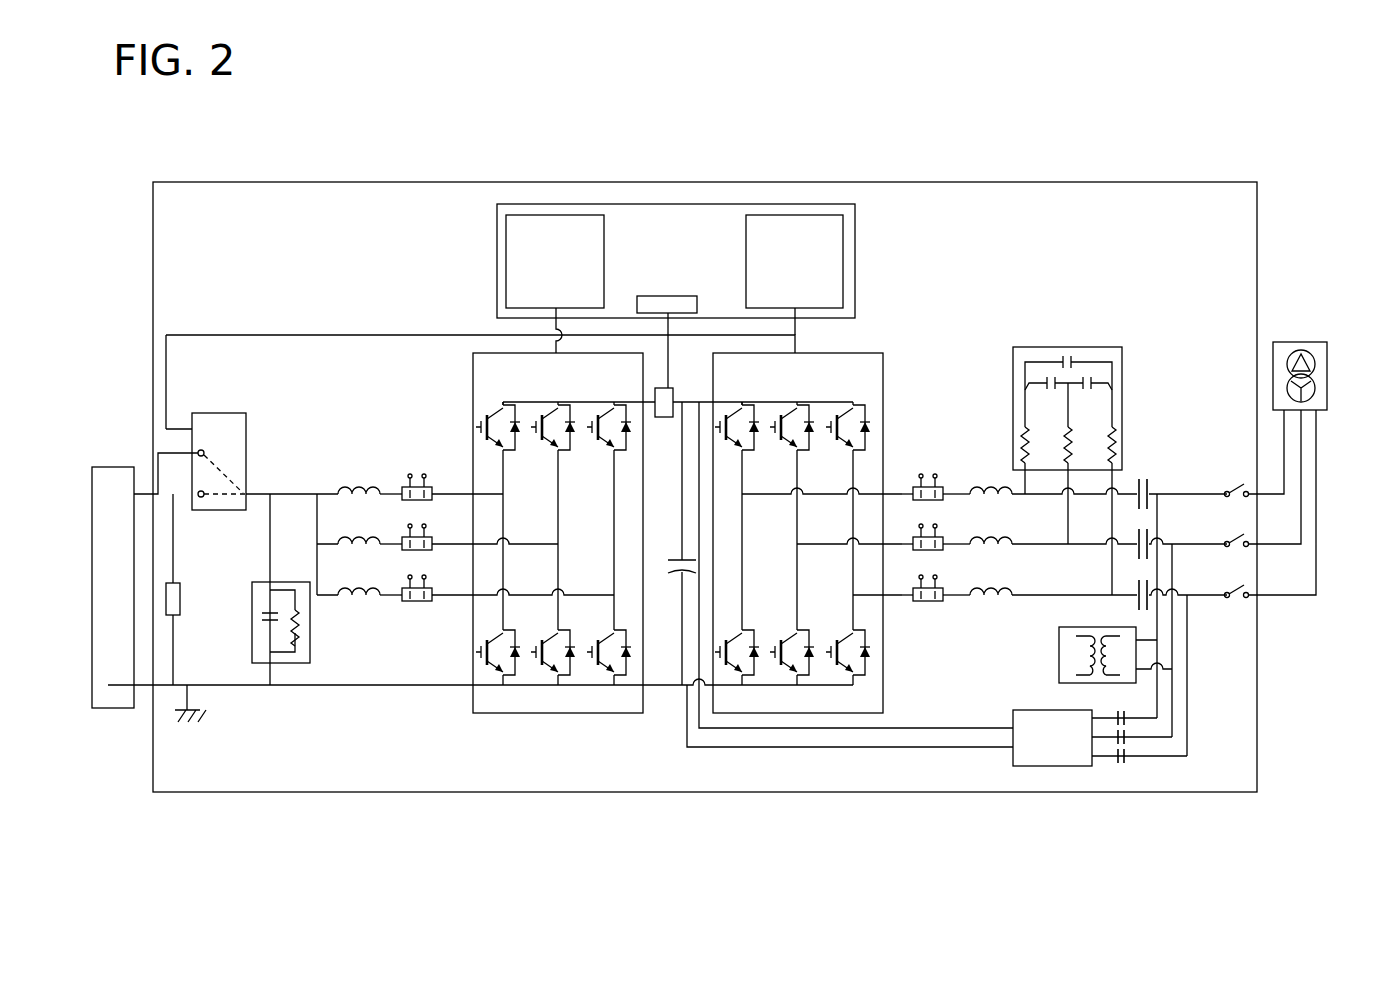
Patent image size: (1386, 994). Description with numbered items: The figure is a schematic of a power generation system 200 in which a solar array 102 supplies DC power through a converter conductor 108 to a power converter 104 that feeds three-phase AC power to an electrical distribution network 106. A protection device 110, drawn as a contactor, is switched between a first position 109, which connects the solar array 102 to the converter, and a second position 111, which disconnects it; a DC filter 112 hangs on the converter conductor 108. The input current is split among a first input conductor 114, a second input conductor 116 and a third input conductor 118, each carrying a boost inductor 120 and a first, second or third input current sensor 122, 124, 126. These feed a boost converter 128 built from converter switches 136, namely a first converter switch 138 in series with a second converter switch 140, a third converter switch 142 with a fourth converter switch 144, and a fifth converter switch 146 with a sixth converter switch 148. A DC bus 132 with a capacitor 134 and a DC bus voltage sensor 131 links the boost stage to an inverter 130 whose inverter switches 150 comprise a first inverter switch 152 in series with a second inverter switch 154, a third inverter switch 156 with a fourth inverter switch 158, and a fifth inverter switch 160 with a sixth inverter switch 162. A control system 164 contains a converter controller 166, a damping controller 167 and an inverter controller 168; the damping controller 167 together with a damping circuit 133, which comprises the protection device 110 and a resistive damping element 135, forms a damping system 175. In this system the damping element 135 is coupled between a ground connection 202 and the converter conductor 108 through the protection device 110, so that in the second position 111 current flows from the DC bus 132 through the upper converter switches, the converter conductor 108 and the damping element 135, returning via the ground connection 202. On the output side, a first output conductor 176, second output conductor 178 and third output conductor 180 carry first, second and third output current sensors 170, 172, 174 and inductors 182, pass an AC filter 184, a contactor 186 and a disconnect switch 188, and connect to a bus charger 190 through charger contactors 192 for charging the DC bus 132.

The solar array 102 is at (90, 466).
The power converter 104 is at (352, 182).
The electrical distribution network 106 is at (1338, 346).
The converter conductor 108 is at (150, 490).
The first position 109 is at (230, 466).
The protection device 110 is at (218, 413).
The second position 111 is at (225, 500).
The DC filter 112 is at (246, 618).
The first input conductor 114 is at (387, 490).
The second input conductor 116 is at (383, 546).
The third input conductor 118 is at (387, 600).
The boost inductor 120 is at (345, 480).
The first input current sensor 122 is at (425, 485).
The second input current sensor 124 is at (425, 536).
The third input current sensor 126 is at (425, 586).
The boost converter 128 is at (473, 363).
The inverter 130 is at (883, 365).
The DC bus voltage sensor 131 is at (664, 420).
The DC bus 132 is at (683, 400).
The damping circuit 133 is at (228, 370).
The capacitor 134 is at (675, 553).
The damping element 135 is at (181, 597).
The converter switches 136 is at (505, 401).
The first converter switch 138 is at (481, 411).
The second converter switch 140 is at (494, 677).
The third converter switch 142 is at (547, 384).
The fourth converter switch 144 is at (549, 677).
The fifth converter switch 146 is at (602, 384).
The sixth converter switch 148 is at (604, 677).
The inverter switches 150 is at (743, 393).
The first inverter switch 152 is at (722, 398).
The second inverter switch 154 is at (733, 677).
The third inverter switch 156 is at (787, 384).
The fourth inverter switch 158 is at (788, 677).
The fifth inverter switch 160 is at (842, 384).
The sixth inverter switch 162 is at (844, 677).
The control system 164 is at (497, 290).
The converter controller 166 is at (604, 232).
The damping controller 167 is at (662, 296).
The inverter controller 168 is at (746, 272).
The first output current sensor 170 is at (917, 488).
The second output current sensor 172 is at (930, 552).
The third output current sensor 174 is at (925, 603).
The damping system 175 is at (271, 296).
The first output conductor 176 is at (963, 490).
The second output conductor 178 is at (957, 540).
The third output conductor 180 is at (960, 600).
The inductor 182 is at (989, 476).
The AC filter 184 is at (1110, 347).
The contactor 186 is at (1143, 471).
The disconnect switch 188 is at (1232, 479).
The bus charger 190 is at (1013, 766).
The charger contactor 192 is at (1130, 761).
The power generation system 200 is at (316, 154).
The ground connection 202 is at (207, 727).